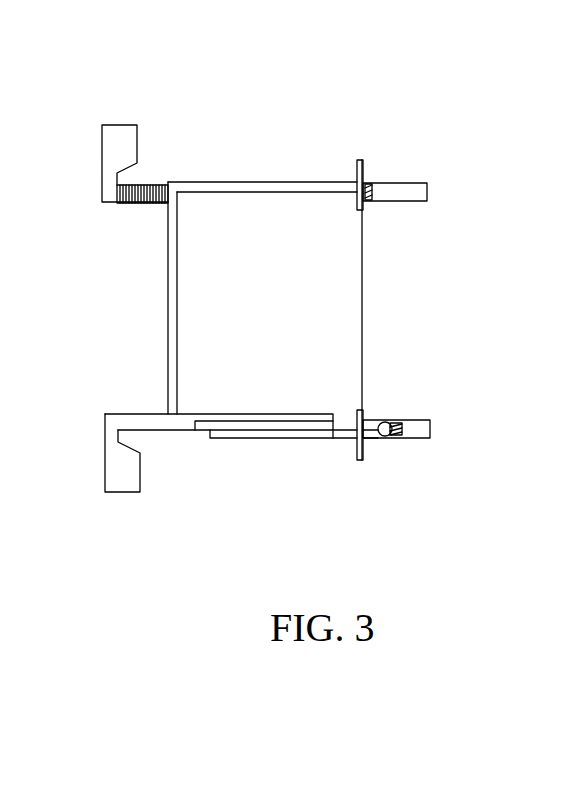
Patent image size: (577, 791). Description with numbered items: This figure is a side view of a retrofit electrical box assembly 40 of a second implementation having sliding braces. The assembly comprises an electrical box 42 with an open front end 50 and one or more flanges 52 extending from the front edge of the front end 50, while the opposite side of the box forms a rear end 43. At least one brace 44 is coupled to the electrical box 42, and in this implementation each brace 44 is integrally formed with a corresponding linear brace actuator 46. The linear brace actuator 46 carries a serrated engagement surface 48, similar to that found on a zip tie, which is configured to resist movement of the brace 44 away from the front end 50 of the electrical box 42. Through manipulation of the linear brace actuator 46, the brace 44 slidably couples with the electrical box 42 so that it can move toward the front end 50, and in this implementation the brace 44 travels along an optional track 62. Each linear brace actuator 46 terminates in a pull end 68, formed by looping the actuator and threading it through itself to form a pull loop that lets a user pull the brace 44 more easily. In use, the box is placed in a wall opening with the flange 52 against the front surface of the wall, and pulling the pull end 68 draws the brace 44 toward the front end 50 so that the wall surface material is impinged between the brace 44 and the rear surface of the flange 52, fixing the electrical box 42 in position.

The retrofit electrical box assembly 40 is at (394, 126).
The electrical box 42 is at (305, 395).
The rear end 43 is at (168, 315).
The brace 44 is at (123, 145).
The linear brace actuator 46 is at (140, 203).
The engagement surface 48 is at (152, 187).
The front end 50 is at (363, 305).
The flange 52 is at (358, 160).
The track 62 is at (262, 417).
The pull end 68 is at (446, 199).